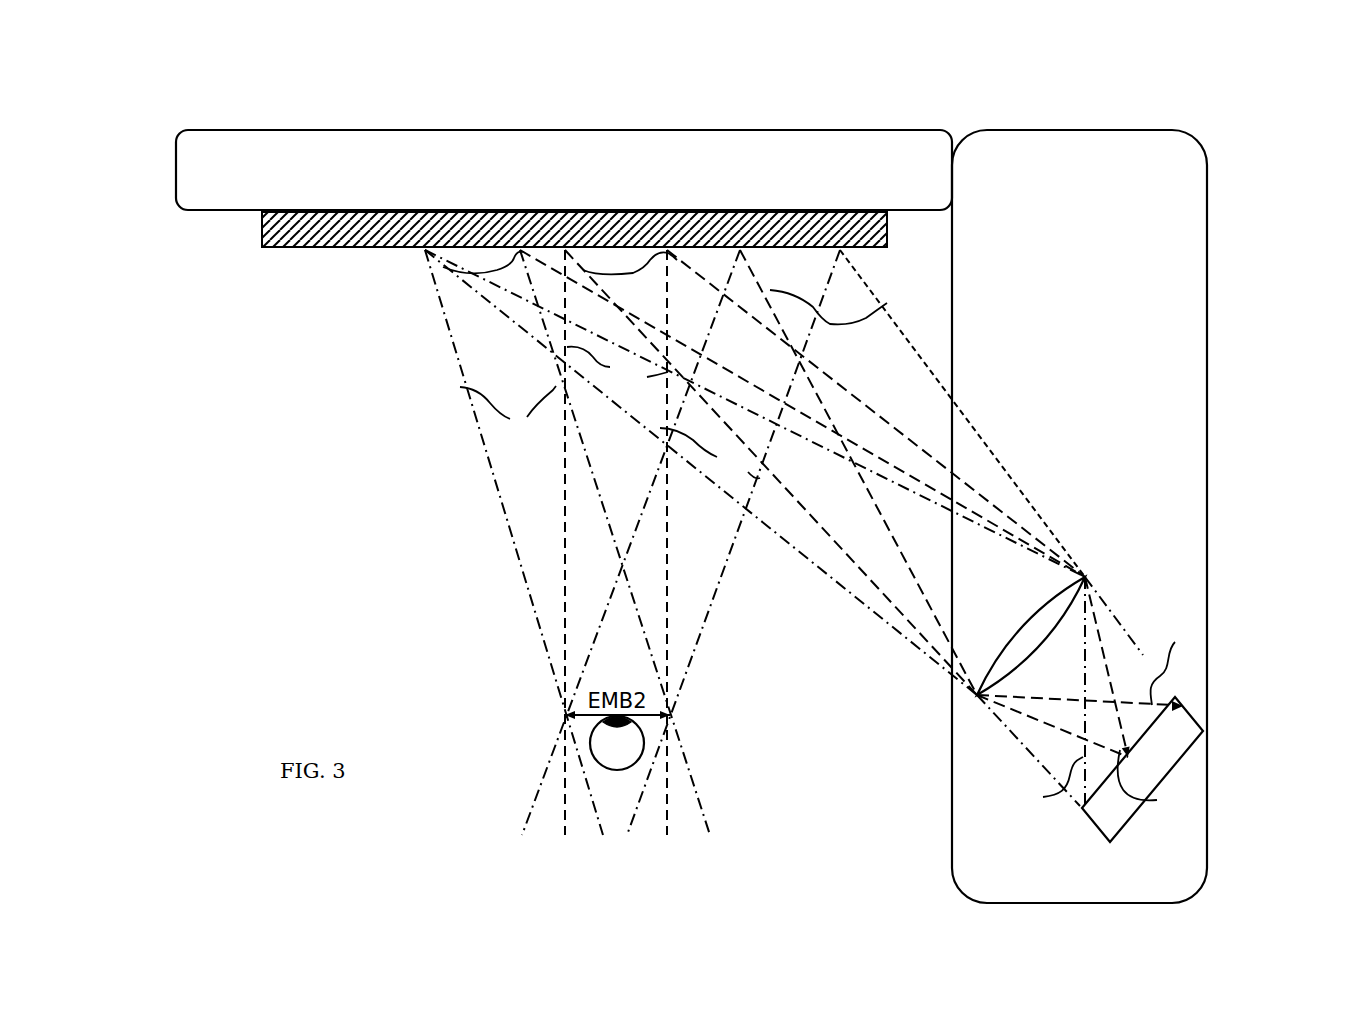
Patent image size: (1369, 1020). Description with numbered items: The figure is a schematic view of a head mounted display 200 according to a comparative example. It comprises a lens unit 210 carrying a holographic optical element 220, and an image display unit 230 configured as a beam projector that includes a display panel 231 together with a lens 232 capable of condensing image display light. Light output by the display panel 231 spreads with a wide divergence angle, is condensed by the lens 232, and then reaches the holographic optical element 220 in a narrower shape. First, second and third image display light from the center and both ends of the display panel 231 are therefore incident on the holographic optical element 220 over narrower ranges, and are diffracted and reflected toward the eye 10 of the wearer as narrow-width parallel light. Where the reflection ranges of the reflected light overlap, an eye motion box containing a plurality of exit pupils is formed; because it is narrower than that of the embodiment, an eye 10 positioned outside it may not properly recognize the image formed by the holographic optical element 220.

The head mounted display 200 is at (75, 64).
The lens unit 210 is at (170, 174).
The holographic optical element 220 is at (358, 250).
The image display unit 230 is at (1167, 480).
The display panel 231 is at (1203, 712).
The lens 232 is at (1087, 577).
The eye 10 is at (617, 770).